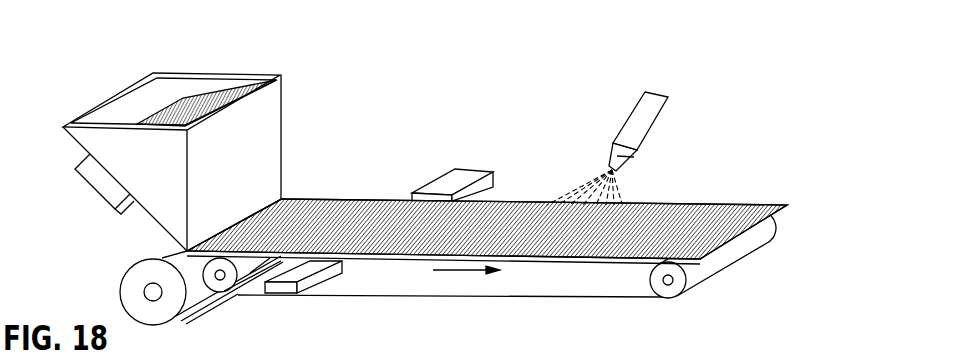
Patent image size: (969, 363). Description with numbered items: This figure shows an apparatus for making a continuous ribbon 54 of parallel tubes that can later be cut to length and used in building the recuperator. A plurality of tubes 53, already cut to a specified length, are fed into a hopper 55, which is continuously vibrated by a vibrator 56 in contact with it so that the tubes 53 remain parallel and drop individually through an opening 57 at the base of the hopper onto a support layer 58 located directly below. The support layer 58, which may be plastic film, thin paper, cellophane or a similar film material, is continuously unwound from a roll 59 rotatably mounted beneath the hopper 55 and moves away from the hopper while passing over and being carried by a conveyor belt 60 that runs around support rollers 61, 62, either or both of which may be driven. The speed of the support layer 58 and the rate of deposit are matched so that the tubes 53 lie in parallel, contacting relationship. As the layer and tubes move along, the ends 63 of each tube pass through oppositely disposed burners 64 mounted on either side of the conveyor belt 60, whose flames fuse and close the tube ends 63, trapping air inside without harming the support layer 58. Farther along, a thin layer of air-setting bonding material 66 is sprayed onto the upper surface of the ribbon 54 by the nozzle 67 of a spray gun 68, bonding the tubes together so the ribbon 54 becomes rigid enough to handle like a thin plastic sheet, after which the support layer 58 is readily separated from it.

The tubes 53 is at (222, 92).
The ribbon of parallel tubes 54 is at (743, 206).
The hopper 55 is at (272, 100).
The vibrator 56 is at (78, 182).
The opening 57 is at (281, 190).
The support layer 58 is at (192, 297).
The roll 59 is at (123, 282).
The conveyor belt 60 is at (484, 298).
The support roller 61 is at (221, 280).
The support roller 62 is at (669, 297).
The tube ends 63 is at (264, 273).
The burners 64 is at (304, 291).
The air-setting bonding material 66 is at (590, 180).
The nozzle 67 is at (623, 158).
The spray gun 68 is at (650, 118).